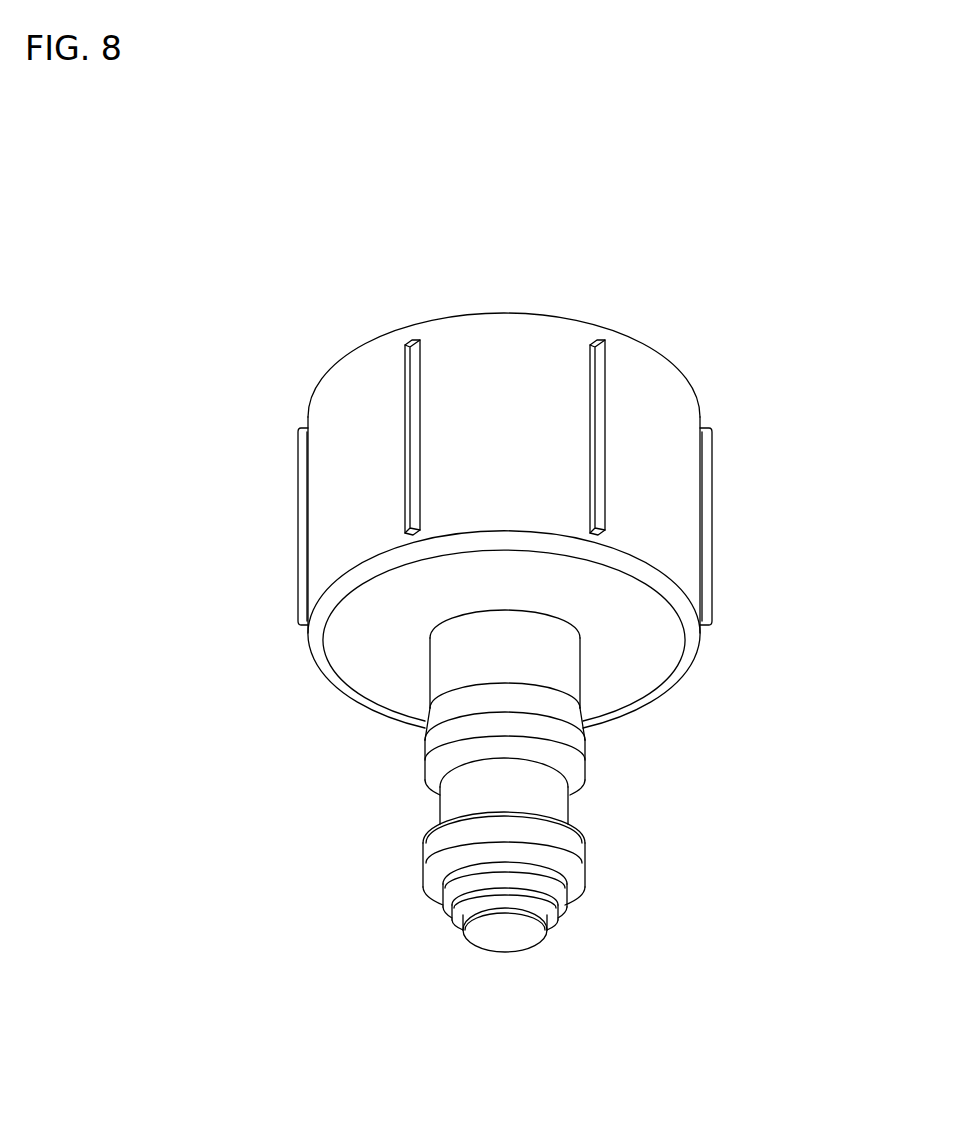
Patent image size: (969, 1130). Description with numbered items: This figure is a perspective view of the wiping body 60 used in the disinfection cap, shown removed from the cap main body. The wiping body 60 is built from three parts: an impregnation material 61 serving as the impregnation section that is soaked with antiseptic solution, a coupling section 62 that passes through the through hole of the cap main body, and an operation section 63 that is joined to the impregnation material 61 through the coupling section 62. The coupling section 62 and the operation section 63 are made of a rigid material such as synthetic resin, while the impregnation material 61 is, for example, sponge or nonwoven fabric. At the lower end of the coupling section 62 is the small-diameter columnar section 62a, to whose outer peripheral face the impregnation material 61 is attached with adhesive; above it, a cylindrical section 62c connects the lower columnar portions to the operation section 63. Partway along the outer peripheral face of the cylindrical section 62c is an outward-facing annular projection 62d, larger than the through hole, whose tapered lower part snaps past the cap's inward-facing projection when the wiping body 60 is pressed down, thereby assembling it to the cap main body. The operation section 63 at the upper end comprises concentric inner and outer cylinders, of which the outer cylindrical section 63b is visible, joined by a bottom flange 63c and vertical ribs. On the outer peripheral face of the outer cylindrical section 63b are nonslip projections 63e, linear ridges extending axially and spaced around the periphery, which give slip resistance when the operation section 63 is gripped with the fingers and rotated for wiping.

The wiping body 60 is at (740, 350).
The impregnation material 61 is at (425, 865).
The coupling section 62 is at (583, 672).
The small-diameter columnar section 62a is at (512, 945).
The cylindrical section 62c is at (555, 806).
The outward-facing annular projection 62d is at (575, 747).
The operation section 63 is at (667, 503).
The outer cylindrical section 63b is at (508, 332).
The bottom flange 63c is at (355, 670).
The nonslip projections 63e is at (408, 387).